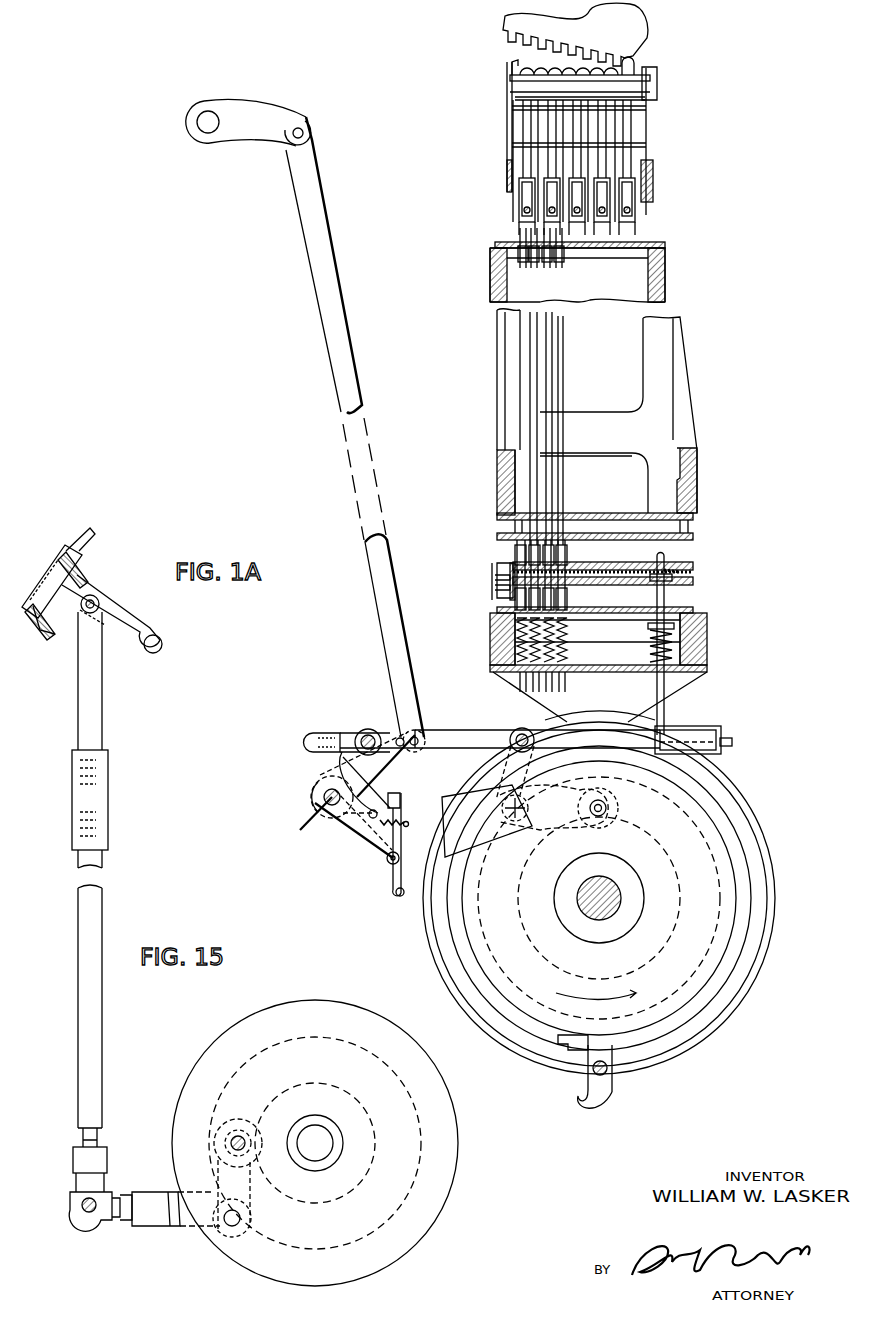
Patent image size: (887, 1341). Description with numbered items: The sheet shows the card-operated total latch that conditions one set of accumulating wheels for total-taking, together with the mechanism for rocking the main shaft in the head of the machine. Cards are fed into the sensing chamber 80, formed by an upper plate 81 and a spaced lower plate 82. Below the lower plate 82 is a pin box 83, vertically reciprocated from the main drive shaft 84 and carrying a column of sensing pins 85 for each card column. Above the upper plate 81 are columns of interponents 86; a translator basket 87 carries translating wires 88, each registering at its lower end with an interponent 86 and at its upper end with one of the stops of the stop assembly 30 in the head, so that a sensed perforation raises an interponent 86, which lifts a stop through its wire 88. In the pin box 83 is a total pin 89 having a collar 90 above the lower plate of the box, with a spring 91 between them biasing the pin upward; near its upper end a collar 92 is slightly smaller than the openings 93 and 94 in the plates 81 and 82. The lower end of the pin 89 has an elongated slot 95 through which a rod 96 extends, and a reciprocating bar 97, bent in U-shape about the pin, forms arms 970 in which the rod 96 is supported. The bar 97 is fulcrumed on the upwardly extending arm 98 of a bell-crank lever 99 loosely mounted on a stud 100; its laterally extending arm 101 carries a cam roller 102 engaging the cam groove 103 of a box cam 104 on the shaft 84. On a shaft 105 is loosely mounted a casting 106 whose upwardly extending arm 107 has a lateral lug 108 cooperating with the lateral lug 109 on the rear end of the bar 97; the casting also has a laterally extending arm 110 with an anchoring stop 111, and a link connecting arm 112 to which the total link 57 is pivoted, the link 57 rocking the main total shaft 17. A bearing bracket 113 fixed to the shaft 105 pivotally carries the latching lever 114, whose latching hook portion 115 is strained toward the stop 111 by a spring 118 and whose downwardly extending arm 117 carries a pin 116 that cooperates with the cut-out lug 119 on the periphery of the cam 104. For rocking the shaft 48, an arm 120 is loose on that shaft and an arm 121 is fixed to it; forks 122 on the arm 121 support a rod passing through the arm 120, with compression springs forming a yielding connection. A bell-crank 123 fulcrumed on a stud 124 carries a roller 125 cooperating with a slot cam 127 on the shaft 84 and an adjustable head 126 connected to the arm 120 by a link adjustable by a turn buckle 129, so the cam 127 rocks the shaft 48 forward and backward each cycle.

In FIG. 1A, the main total shaft 17 is at (208, 122).
In FIG. 1A, the total link 57 is at (328, 330).
In FIG. 1A, the type bar assembly 30 is at (540, 133).
In FIG. 1A, the interponents 86 is at (520, 230).
In FIG. 1A, the translator basket 87 is at (510, 290).
In FIG. 1A, the translating wires 88 is at (546, 382).
In FIG. 1A, the sensing chamber 80 is at (712, 580).
In FIG. 1A, the upper plate 81 is at (598, 575).
In FIG. 1A, the lower plate 82 is at (595, 582).
In FIG. 1A, the sensing pins 85 is at (525, 596).
In FIG. 1A, the opening 93 is at (658, 572).
In FIG. 1A, the collar 92 is at (666, 580).
In FIG. 1A, the opening 94 is at (656, 585).
In FIG. 1A, the collar 90 is at (650, 630).
In FIG. 1A, the spring 91 is at (650, 648).
In FIG. 1A, the total pin 89 is at (658, 690).
In FIG. 1A, the pin box 83 is at (595, 700).
In FIG. 1A, the reciprocating bar 97 is at (458, 742).
In FIG. 1A, the elongated slot 95 is at (670, 735).
In FIG. 1A, the arms 970 is at (655, 728).
In FIG. 1A, the rod 96 is at (732, 742).
In FIG. 1A, the lateral lug 109 is at (312, 733).
In FIG. 1A, the lateral lug 108 is at (334, 732).
In FIG. 1A, the upwardly extending arm 107 is at (356, 733).
In FIG. 1A, the link connecting arm 112 is at (398, 758).
In FIG. 1A, the bearing bracket 113 is at (310, 797).
In FIG. 1A, the casting 106 is at (338, 770).
In FIG. 1A, the laterally extending arm 110 is at (340, 838).
In FIG. 1A, the anchoring stop 111 is at (378, 810).
In FIG. 1A, the latching hook portion 115 is at (408, 797).
In FIG. 1A, the spring 118 is at (404, 822).
In FIG. 1A, the shaft 105 is at (302, 830).
In FIG. 1A, the pin 116 is at (400, 900).
In FIG. 1A, the downwardly extending arm 117 is at (406, 900).
In FIG. 1A, the latching lever 114 is at (379, 884).
In FIG. 1A, the upwardly extending arm 98 is at (515, 764).
In FIG. 1A, the bell-crank lever 99 is at (500, 792).
In FIG. 1A, the stud 100 is at (517, 822).
In FIG. 1A, the laterally extending arm 101 is at (545, 828).
In FIG. 1A, the cam roller 102 is at (617, 808).
In FIG. 1A, the cam groove 103 is at (725, 828).
In FIG. 1A, the box cam 104 is at (735, 882).
In FIG. 1A, the main drive shaft 84 is at (610, 903).
In FIG. 15, the main drive shaft 84 is at (325, 1142).
In FIG. 1A, the cut-out lug 119 is at (610, 1078).
In FIG. 1A, the arm 121 is at (55, 563).
In FIG. 1A, the forks 122 is at (88, 560).
In FIG. 1A, the arm 120 is at (130, 620).
In FIG. 1A, the shaft 48 is at (163, 648).
In FIG. 1A, the turn buckle 129 is at (105, 818).
In FIG. 15, the adjustable head 126 is at (105, 1192).
In FIG. 15, the bell-crank 123 is at (196, 1232).
In FIG. 15, the slot cam 127 is at (322, 1000).
In FIG. 15, the roller 125 is at (246, 1122).
In FIG. 15, the stud 124 is at (245, 1237).